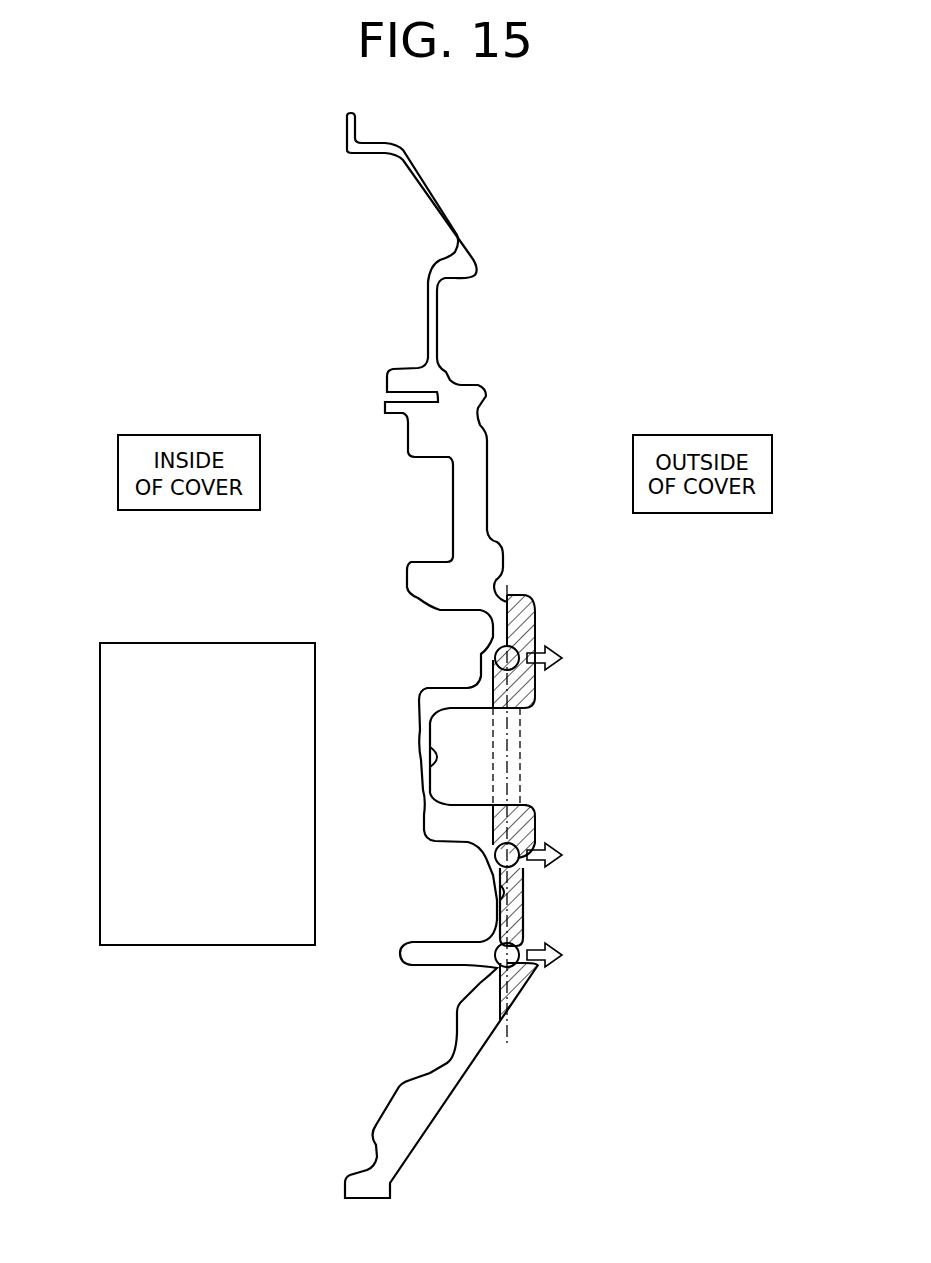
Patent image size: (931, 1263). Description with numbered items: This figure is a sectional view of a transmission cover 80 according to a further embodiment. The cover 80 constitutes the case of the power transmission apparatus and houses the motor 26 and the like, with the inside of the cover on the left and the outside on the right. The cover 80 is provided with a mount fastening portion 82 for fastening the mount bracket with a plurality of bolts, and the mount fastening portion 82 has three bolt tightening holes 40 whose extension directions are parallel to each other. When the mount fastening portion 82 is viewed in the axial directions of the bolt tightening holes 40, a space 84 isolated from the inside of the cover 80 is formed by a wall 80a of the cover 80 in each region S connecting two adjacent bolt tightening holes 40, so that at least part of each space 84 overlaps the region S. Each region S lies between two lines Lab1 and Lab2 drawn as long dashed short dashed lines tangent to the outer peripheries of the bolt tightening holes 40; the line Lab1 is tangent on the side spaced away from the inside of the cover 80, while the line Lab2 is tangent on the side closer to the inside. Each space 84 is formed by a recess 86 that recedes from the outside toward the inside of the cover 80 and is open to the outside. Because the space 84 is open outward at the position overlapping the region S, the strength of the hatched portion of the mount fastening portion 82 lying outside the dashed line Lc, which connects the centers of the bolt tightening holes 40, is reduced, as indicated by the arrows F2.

The transmission cover 80 is at (530, 333).
The mount fastening portion 82 is at (614, 742).
The space 84 is at (456, 735).
The recess 86 is at (438, 762).
The wall 80a is at (420, 760).
The bolt tightening hole 40 is at (494, 660).
The motor 26 is at (243, 655).
The force F2 is at (559, 807).
The dashed line connecting the centers of the bolt tightening holes Lc is at (508, 590).
The line tangent to the outer peripheries of the bolt tightening holes Lab1 is at (523, 748).
The line tangent to the outer peripheries of the bolt tightening holes Lab2 is at (493, 757).
The region S is at (510, 797).